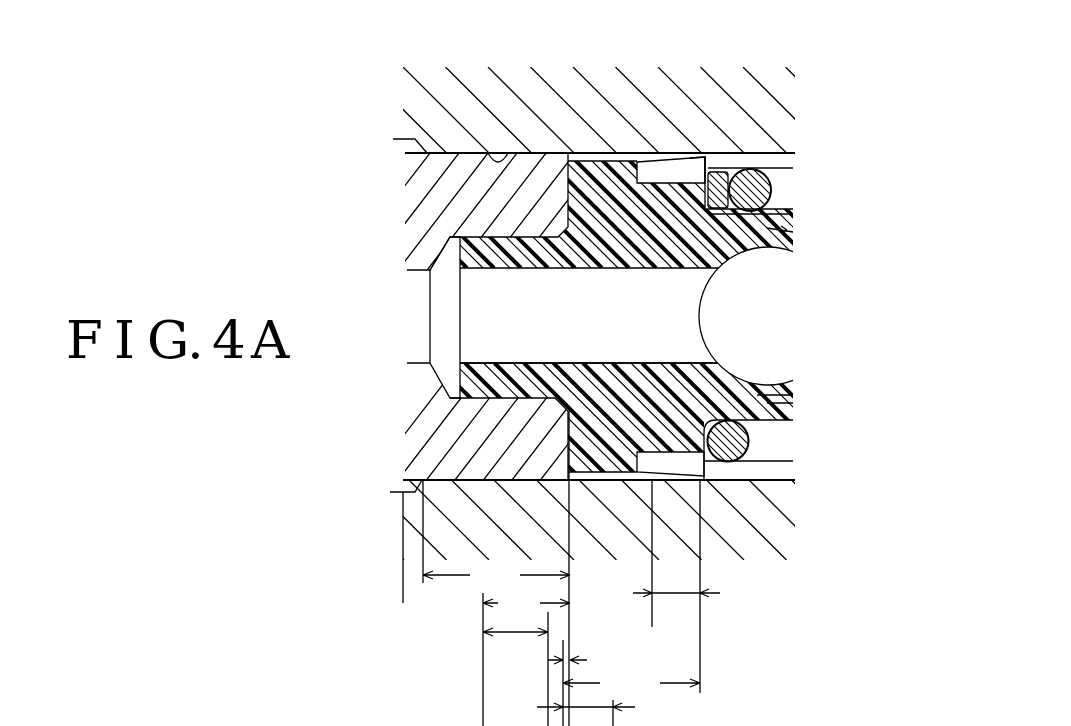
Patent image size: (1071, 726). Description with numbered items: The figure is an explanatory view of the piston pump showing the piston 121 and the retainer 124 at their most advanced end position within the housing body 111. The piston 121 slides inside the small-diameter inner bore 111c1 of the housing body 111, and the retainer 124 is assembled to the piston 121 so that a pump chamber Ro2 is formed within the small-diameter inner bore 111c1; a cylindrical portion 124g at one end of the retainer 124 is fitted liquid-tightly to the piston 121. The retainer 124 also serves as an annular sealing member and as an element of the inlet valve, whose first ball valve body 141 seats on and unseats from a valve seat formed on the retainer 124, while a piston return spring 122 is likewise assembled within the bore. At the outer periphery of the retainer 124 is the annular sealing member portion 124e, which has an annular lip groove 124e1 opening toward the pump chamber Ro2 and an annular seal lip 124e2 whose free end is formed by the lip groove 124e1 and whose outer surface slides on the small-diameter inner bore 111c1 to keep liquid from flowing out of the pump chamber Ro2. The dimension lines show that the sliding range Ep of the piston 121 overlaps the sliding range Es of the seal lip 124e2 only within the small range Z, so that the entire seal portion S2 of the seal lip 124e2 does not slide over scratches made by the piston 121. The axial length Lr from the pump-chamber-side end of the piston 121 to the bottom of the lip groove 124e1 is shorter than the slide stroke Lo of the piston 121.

The housing body 111 is at (780, 523).
The small-diameter inner bore 111c1 is at (490, 158).
The piston 121 is at (415, 425).
The retainer 124 is at (592, 173).
The annular sealing member portion 124e is at (657, 158).
The annular lip groove 124e1 is at (704, 466).
The annular seal lip 124e2 is at (698, 158).
The cylindrical portion 124g is at (505, 373).
The piston return spring 122 is at (768, 167).
The pump chamber Ro2 is at (722, 165).
The first ball valve body 141 is at (699, 318).
The sliding range of the piston Ep is at (496, 534).
The range of reciprocation of the piston Lo is at (526, 659).
The axial length to the bottom of the lip groove Lr is at (515, 669).
The overlap range Z is at (566, 652).
The sliding range of the seal lip Es is at (631, 589).
The seal portion S2 is at (628, 603).